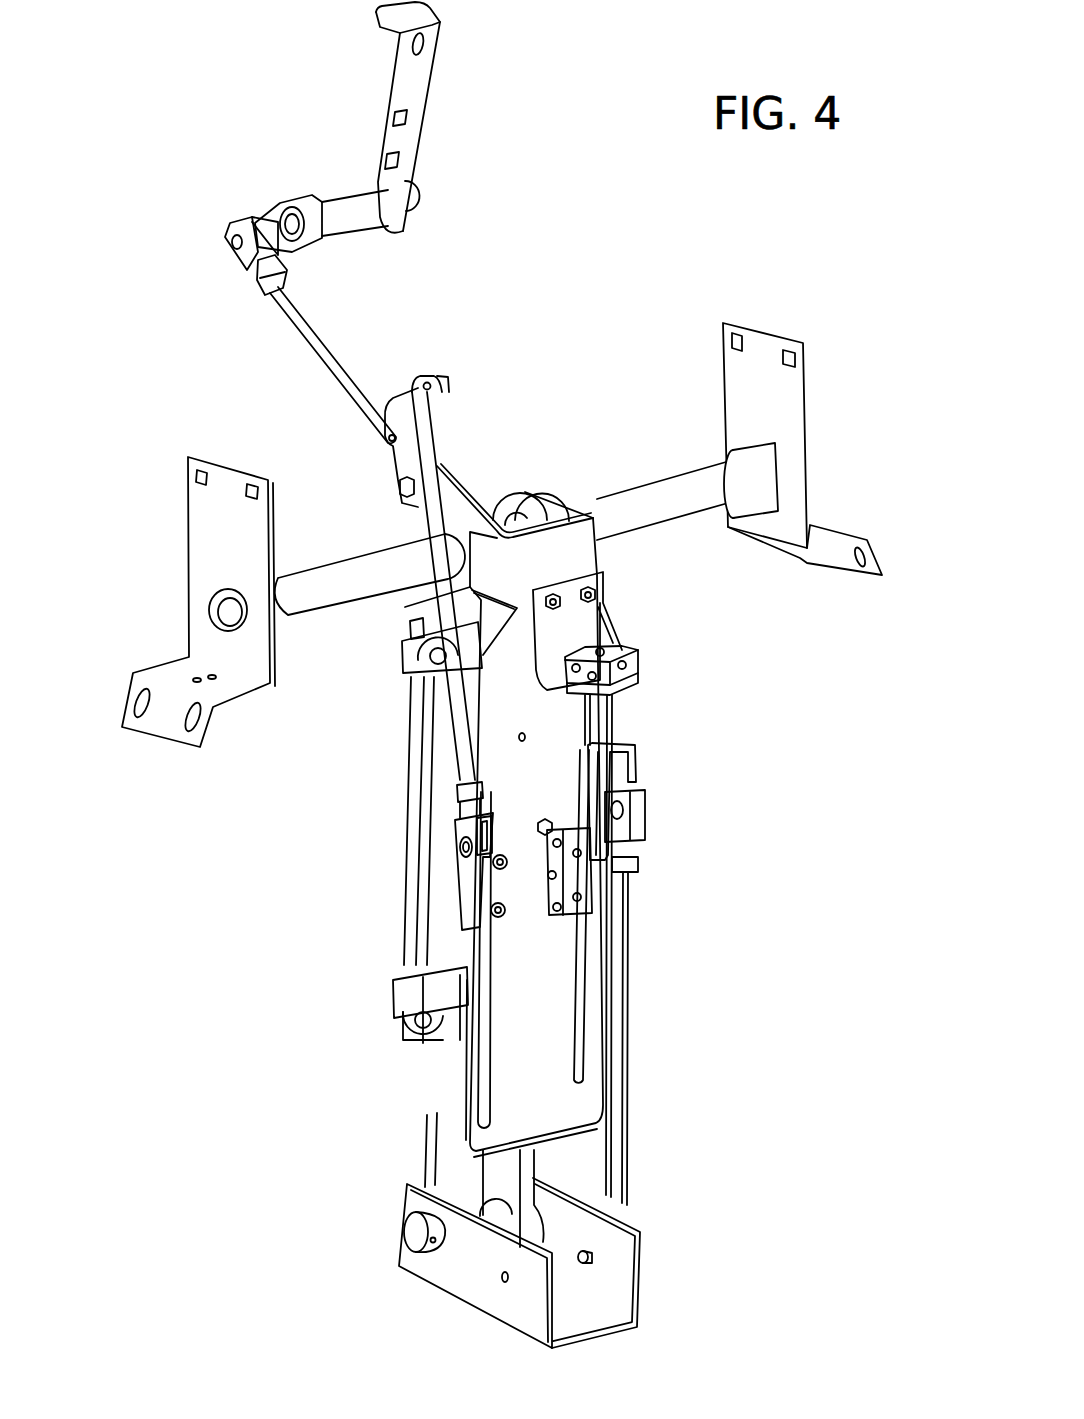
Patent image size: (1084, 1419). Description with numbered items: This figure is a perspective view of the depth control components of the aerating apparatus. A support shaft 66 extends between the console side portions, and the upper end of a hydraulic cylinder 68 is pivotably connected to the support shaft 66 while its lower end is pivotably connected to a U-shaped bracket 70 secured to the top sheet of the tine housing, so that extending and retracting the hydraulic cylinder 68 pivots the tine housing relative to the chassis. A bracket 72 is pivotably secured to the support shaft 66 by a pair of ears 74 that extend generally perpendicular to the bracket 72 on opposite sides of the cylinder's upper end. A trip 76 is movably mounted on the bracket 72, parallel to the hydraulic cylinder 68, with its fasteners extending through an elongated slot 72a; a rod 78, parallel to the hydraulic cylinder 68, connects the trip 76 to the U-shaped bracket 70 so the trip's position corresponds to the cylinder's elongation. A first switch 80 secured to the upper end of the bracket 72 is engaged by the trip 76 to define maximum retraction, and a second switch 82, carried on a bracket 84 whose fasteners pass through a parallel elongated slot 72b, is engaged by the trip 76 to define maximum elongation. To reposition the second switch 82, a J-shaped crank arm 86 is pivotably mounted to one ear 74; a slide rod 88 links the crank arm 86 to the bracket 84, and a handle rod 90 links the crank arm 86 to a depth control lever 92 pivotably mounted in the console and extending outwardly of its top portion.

The support shaft 66 is at (655, 507).
The hydraulic cylinder 68 is at (417, 830).
The U-shaped bracket 70 is at (463, 1287).
The bracket 72 is at (597, 597).
The elongated slot 72a is at (567, 1037).
The elongated slot 72b is at (478, 1073).
The ears 74 is at (450, 503).
The trip 76 is at (597, 773).
The rod 78 is at (637, 1190).
The first switch 80 is at (640, 660).
The second switch 82 is at (577, 910).
The bracket 84 is at (490, 884).
The J-shaped crank arm 86 is at (403, 413).
The slide rod 88 is at (442, 588).
The handle rod 90 is at (310, 337).
The depth control lever 92 is at (430, 78).